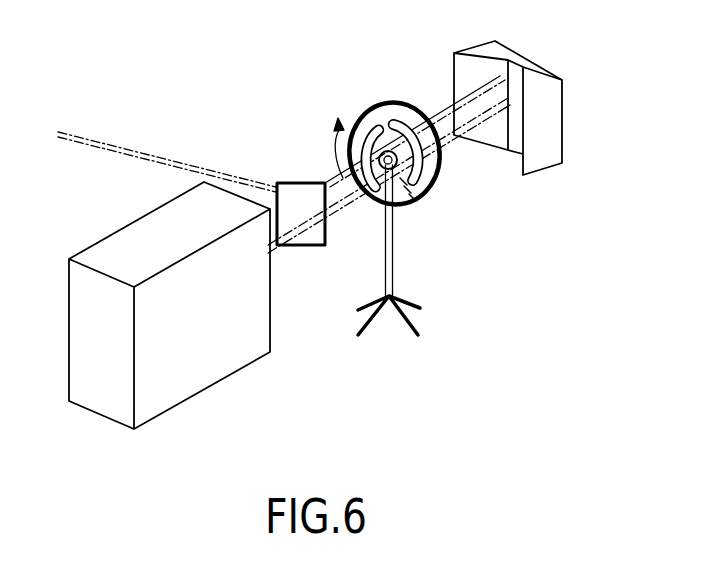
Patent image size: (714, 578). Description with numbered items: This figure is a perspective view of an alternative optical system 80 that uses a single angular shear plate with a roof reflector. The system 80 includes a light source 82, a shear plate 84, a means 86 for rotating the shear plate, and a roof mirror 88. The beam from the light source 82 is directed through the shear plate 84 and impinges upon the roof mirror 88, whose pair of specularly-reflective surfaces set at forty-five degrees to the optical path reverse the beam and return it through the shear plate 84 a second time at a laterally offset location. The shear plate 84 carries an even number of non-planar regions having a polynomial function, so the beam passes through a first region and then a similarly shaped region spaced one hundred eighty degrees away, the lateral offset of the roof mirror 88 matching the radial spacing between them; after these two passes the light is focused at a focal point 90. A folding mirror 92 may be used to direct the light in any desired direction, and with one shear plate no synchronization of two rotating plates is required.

The optical system 80 is at (349, 235).
The light source 82 is at (237, 340).
The shear plate 84 is at (405, 206).
The means for rotating the shear plate 86 is at (387, 150).
The roof mirror 88 is at (510, 152).
The focal point 90 is at (167, 158).
The folding mirror 92 is at (322, 216).